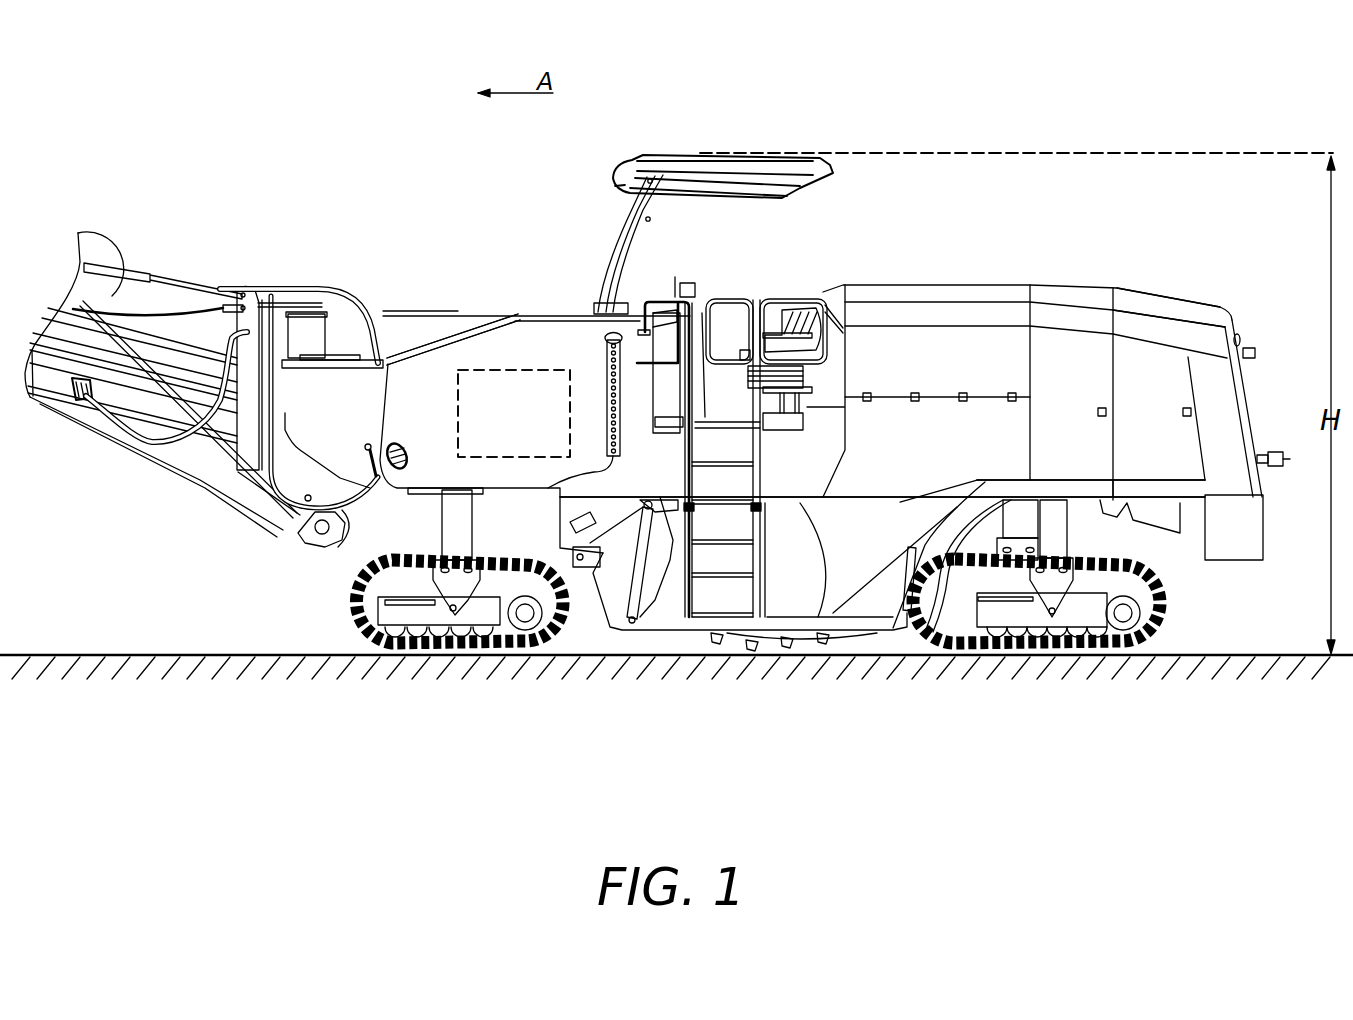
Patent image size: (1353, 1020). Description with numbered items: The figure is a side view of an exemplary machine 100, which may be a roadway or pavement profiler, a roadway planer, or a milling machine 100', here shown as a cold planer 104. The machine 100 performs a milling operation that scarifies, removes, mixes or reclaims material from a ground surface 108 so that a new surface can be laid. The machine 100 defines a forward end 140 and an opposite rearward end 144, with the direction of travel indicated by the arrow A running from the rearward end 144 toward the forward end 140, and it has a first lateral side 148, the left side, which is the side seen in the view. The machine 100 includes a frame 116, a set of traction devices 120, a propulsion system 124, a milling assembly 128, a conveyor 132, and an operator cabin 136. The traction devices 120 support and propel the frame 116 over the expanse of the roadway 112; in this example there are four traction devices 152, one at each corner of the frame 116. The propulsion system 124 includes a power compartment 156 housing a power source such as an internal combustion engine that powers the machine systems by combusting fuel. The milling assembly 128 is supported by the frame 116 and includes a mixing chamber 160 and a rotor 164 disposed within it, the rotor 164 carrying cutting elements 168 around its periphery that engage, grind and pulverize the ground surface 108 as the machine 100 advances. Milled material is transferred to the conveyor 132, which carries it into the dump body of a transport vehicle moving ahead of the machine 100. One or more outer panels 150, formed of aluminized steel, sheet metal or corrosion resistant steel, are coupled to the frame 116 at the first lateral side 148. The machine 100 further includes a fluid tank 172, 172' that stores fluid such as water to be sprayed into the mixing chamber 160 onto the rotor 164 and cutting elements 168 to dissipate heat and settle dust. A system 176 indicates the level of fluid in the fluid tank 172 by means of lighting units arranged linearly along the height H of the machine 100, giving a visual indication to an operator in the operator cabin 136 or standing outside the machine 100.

The machine 100 is at (710, 270).
The milling machine 100' is at (710, 261).
The cold planer 104 is at (390, 108).
The ground surface 108 is at (66, 654).
The roadway 112 is at (38, 650).
The frame 116 is at (807, 500).
The traction devices 120 is at (347, 621).
The propulsion system 124 is at (1073, 287).
The milling assembly 128 is at (667, 630).
The conveyor 132 is at (128, 393).
The operator cabin 136 is at (791, 282).
The forward end 140 is at (380, 410).
The rearward end 144 is at (1257, 413).
The first lateral side 148 is at (1226, 526).
The outer panels 150 is at (589, 470).
The four traction devices 152 is at (352, 630).
The power compartment 156 is at (1150, 300).
The mixing chamber 160 is at (662, 608).
The rotor 164 is at (728, 652).
The cutting elements 168 is at (770, 657).
The fluid tank 172 is at (514, 361).
The controller (alternate) 172' is at (514, 349).
The system 176 is at (604, 381).